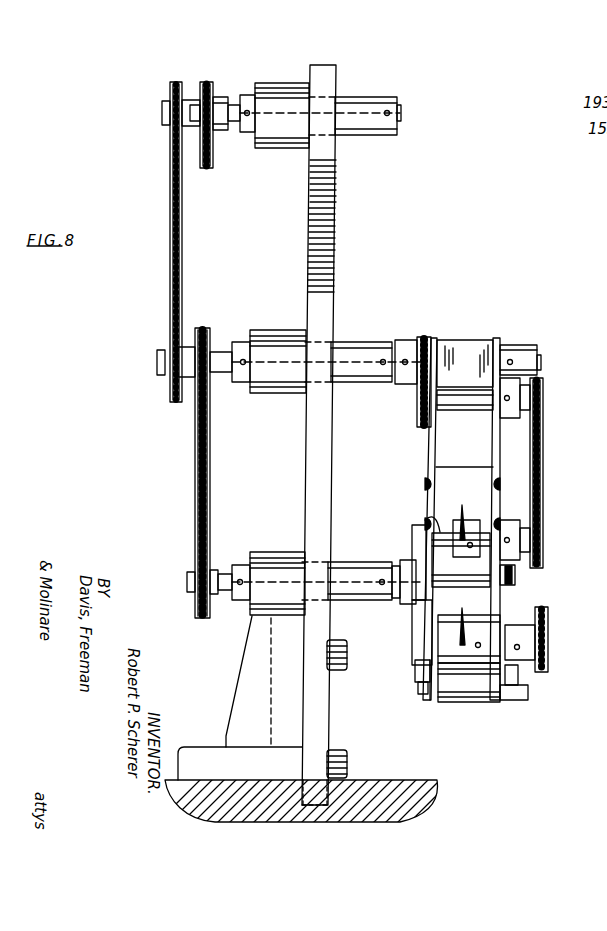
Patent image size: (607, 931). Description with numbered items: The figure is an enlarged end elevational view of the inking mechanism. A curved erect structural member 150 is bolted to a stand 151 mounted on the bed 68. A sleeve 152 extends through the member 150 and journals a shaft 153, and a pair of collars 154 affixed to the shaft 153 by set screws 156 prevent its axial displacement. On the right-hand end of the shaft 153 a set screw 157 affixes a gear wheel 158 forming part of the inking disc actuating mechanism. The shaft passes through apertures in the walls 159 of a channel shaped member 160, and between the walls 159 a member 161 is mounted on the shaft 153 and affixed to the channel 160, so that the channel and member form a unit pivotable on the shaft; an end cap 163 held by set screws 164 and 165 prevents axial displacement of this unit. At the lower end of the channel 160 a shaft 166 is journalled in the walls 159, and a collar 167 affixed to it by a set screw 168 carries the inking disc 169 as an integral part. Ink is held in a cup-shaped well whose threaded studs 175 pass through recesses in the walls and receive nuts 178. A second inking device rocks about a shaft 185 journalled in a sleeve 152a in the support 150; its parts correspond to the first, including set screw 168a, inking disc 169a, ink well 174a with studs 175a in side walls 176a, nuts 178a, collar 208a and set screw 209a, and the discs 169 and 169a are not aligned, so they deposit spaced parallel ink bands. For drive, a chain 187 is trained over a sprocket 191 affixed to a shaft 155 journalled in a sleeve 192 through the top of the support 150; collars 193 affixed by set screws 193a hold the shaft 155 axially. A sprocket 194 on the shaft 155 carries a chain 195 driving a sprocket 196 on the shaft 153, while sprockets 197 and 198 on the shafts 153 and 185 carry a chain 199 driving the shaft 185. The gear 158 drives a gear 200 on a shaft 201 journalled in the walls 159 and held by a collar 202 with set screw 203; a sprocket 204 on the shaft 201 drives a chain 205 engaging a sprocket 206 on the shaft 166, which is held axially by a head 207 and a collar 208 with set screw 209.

The bed 68 is at (388, 782).
The structural member 150 is at (329, 290).
The stand 151 is at (240, 696).
The sleeve 152 is at (295, 372).
The sleeve 152a is at (300, 592).
The shaft 153 is at (167, 352).
The collars 154 is at (245, 342).
The shaft 155 is at (162, 116).
The set screws 156 is at (243, 366).
The set screw 157 is at (405, 366).
The gear wheel 158 is at (426, 337).
The walls 159 is at (428, 450).
The channel shaped member 160 is at (478, 455).
The member 161 is at (458, 352).
The end cap 163 is at (528, 347).
The set screw 164 is at (510, 345).
The set screw 165 is at (542, 364).
The shaft 166 is at (424, 528).
The collar 167 is at (470, 589).
The set screw 168 is at (470, 540).
The set screw 168a is at (482, 640).
The inking disc 169 is at (445, 500).
The inking disc 169a is at (426, 622).
The ink well 174a is at (490, 690).
The threaded studs 175 is at (516, 573).
The threaded studs 175a is at (415, 670).
The side walls 176a is at (438, 710).
The nuts 178 is at (512, 580).
The nuts 178a is at (424, 695).
The shaft 185 is at (220, 568).
The chain 187 is at (206, 170).
The sprocket 191 is at (220, 88).
The sleeve 192 is at (300, 124).
The collars 193 is at (393, 98).
The set screws 193a is at (247, 118).
The sprocket 194 is at (160, 100).
The chain 195 is at (172, 186).
The sprocket 196 is at (160, 366).
The sprocket 197 is at (205, 328).
The sprocket 198 is at (192, 586).
The chain 199 is at (210, 447).
The gear 200 is at (416, 430).
The shaft 201 is at (490, 404).
The collar 202 is at (512, 402).
The set screw 203 is at (532, 405).
The sprocket 204 is at (555, 394).
The chain 205 is at (545, 470).
The sprocket 206 is at (552, 541).
The head 207 is at (408, 560).
The collar 208 is at (528, 552).
The collar 208a is at (550, 622).
The set screw 209 is at (520, 540).
The set screw 209a is at (537, 642).